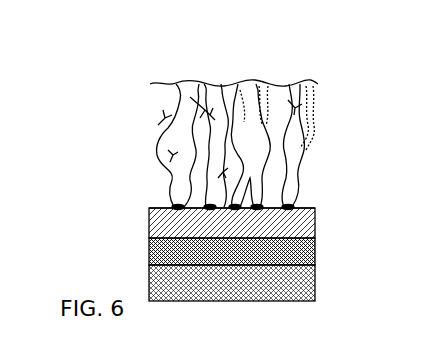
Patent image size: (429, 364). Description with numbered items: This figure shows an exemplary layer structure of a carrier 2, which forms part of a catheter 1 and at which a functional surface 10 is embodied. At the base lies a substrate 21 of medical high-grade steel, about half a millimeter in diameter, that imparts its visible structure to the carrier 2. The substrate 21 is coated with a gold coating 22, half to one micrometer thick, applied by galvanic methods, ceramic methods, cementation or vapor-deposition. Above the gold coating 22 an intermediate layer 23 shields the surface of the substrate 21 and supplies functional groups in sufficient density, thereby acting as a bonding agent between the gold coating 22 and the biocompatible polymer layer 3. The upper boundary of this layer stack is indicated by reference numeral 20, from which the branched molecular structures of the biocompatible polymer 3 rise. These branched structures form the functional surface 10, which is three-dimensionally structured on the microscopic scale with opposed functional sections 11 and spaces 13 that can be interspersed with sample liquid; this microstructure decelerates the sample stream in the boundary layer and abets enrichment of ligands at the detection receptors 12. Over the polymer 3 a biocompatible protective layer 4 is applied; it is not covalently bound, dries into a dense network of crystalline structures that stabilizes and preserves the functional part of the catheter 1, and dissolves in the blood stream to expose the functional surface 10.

The catheter 1 is at (346, 52).
The carrier 2 is at (320, 208).
The biocompatible polymer layer 3 is at (303, 164).
The protective layer 4 is at (169, 84).
The functional surface 10 is at (252, 48).
The functional sections 11 is at (279, 84).
The detection receptors 12 is at (307, 84).
The spaces 13 is at (229, 127).
The substrate surface 20 is at (312, 208).
The substrate 21 is at (316, 285).
The gold coating 22 is at (316, 252).
The intermediate layer 23 is at (316, 223).